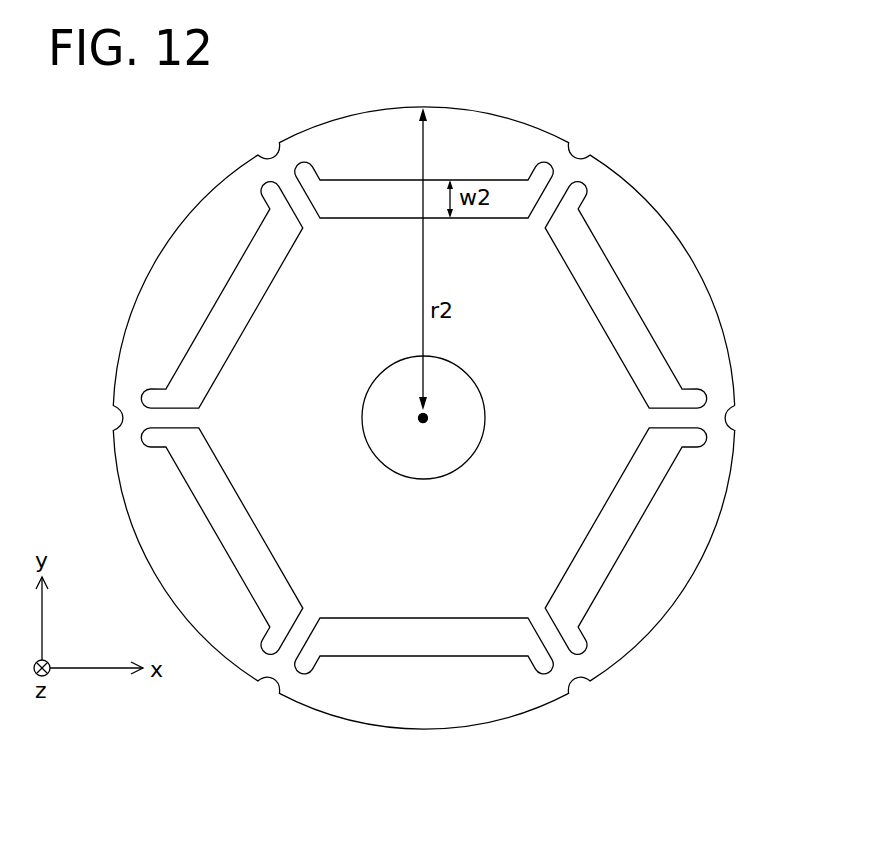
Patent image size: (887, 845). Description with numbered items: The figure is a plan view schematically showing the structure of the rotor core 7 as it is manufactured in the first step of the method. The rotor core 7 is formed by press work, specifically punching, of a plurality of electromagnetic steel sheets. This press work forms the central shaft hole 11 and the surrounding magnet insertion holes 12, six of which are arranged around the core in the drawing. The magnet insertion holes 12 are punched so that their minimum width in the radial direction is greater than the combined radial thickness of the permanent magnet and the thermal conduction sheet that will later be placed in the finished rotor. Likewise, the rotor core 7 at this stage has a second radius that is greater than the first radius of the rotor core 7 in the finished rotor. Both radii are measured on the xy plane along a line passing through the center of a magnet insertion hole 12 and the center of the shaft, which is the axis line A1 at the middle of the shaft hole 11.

The rotor core 7 is at (386, 130).
The shaft hole 11 is at (426, 478).
The magnet insertion hole 12 is at (382, 218).
The axis line A1 is at (428, 418).